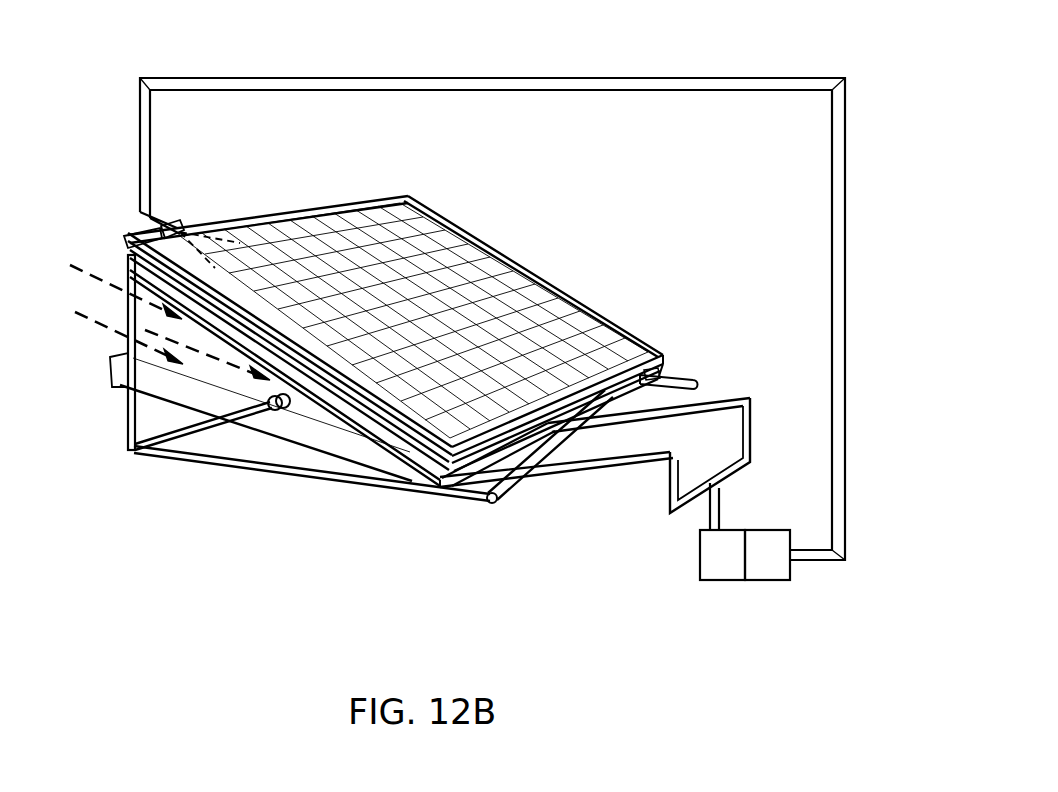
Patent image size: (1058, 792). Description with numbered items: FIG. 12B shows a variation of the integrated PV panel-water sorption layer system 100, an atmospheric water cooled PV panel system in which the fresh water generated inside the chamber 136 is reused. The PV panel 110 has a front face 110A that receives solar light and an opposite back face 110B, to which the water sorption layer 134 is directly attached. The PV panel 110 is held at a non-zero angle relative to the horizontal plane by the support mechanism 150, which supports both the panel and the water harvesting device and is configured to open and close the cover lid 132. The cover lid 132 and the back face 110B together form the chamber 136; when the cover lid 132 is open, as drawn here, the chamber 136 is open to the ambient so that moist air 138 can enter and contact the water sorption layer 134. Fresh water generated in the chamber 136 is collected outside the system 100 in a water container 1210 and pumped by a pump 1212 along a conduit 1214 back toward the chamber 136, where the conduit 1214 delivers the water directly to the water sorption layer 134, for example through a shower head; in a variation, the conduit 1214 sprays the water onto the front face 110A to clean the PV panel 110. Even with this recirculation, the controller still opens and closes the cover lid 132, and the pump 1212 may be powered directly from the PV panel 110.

The integrated PV panel-water sorption layer system 100 is at (745, 50).
The PV panel 110 is at (528, 265).
The front face 110A is at (313, 215).
The back face 110B is at (380, 412).
The cover lid 132 is at (200, 400).
The water sorption layer 134 is at (140, 287).
The chamber 136 is at (162, 450).
The moist air 138 is at (100, 275).
The support mechanism 150 is at (128, 423).
The water container 1210 is at (725, 582).
The pump 1212 is at (773, 582).
The conduit 1214 is at (848, 320).